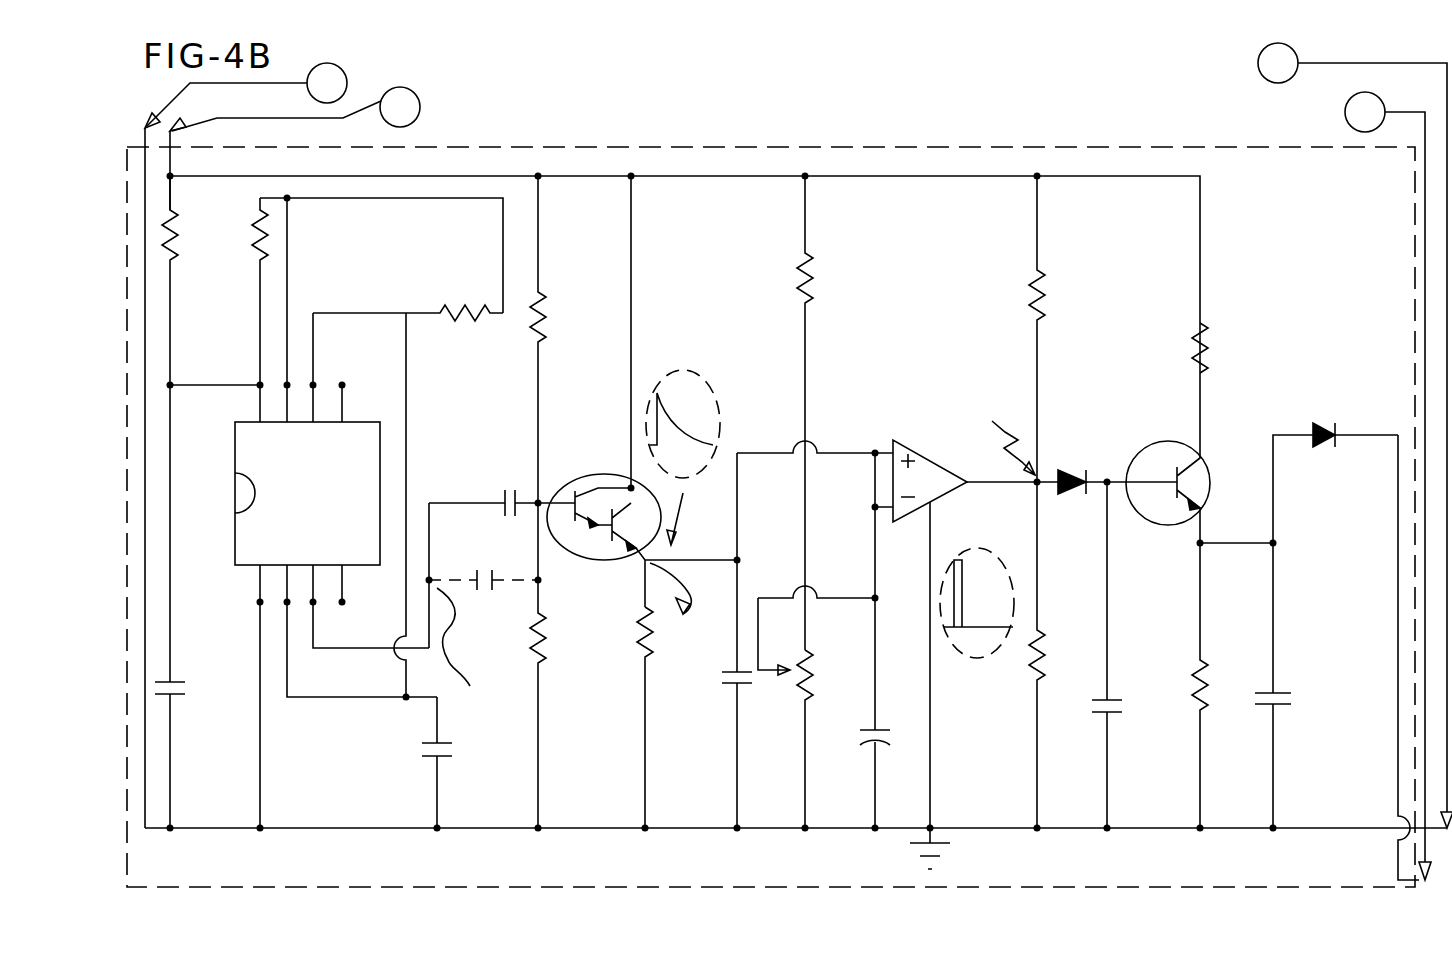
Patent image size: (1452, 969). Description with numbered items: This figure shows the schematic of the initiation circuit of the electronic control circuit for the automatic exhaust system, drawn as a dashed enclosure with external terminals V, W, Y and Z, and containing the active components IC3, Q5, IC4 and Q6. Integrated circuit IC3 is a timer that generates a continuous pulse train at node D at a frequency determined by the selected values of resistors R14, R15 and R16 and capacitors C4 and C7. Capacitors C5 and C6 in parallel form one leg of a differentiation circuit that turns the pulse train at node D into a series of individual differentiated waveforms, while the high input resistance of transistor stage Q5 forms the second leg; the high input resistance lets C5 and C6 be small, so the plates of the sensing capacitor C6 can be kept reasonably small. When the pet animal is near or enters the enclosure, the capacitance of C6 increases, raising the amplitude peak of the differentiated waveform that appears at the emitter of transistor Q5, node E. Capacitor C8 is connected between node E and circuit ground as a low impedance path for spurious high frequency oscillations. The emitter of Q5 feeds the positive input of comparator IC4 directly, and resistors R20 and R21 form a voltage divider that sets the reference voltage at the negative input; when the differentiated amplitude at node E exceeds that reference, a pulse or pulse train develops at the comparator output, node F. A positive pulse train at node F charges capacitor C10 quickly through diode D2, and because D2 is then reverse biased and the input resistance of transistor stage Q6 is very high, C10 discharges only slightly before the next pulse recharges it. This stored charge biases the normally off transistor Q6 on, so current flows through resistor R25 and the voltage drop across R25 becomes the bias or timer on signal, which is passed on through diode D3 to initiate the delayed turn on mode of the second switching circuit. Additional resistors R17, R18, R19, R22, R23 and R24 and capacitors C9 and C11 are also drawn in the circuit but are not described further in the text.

The node E is at (832, 147).
The terminal V is at (246, 445).
The terminal W is at (295, 148).
The terminal Y is at (1355, 435).
The terminal Z is at (1388, 486).
The resistor R14 is at (193, 280).
The resistor R15 is at (354, 291).
The resistor R16 is at (408, 345).
The resistor R17 is at (564, 339).
The resistor R18 is at (507, 665).
The resistor R19 is at (615, 717).
The resistor R20 is at (771, 413).
The resistor R21 is at (806, 713).
The resistor R22 is at (1004, 329).
The resistor R23 is at (1009, 655).
The resistor R24 is at (1168, 348).
The resistor R25 is at (1168, 685).
The capacitor C4 is at (183, 606).
The capacitor C5 is at (483, 560).
The sensing capacitor C6 is at (483, 566).
The capacitor C7 is at (412, 762).
The capacitor C8 is at (720, 640).
The capacitor C9 is at (859, 779).
The capacitor C10 is at (1086, 655).
The capacitor C11 is at (1266, 685).
The timer IC3 is at (303, 513).
The comparator IC4 is at (975, 649).
The transistor Q5 is at (637, 391).
The transistor Q6 is at (1158, 458).
The diode D2 is at (1082, 469).
The diode D3 is at (1335, 467).
The node D is at (468, 656).
The node F is at (999, 434).